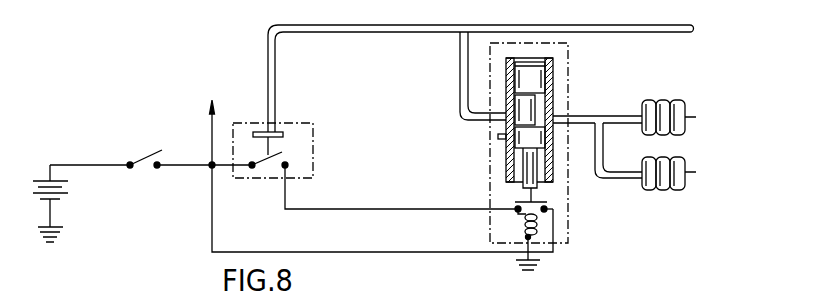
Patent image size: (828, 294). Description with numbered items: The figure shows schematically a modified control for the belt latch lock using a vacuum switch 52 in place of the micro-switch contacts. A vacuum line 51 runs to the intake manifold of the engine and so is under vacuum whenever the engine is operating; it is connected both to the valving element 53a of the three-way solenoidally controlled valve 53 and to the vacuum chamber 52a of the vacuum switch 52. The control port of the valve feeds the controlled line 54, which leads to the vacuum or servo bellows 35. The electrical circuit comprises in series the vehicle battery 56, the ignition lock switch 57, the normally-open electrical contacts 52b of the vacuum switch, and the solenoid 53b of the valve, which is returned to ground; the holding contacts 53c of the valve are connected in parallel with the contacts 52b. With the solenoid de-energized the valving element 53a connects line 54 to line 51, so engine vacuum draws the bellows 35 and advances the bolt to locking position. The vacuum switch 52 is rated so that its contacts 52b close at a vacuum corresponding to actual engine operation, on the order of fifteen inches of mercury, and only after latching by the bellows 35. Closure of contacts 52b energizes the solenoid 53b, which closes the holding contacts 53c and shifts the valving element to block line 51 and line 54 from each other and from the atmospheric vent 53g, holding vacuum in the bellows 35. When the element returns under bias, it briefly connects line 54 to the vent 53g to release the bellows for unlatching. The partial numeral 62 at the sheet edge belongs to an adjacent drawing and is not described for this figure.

The vacuum or servo bellows 35 is at (683, 110).
The vacuum line 51 is at (460, 50).
The vacuum switch 52 is at (273, 141).
The vacuum chamber 52a is at (285, 132).
The normally-open electrical contacts 52b is at (272, 166).
The three-way solenoidally controlled valve 53 is at (491, 135).
The valving element 53a is at (514, 100).
The solenoid 53b is at (525, 229).
The holding contacts 53c is at (515, 201).
The atmospheric vent 53g is at (498, 136).
The controlled line 54 is at (610, 117).
The vehicle battery 56 is at (70, 190).
The ignition lock switch 57 is at (145, 157).
The reference numeral (adjacent figure) 62 is at (597, 291).